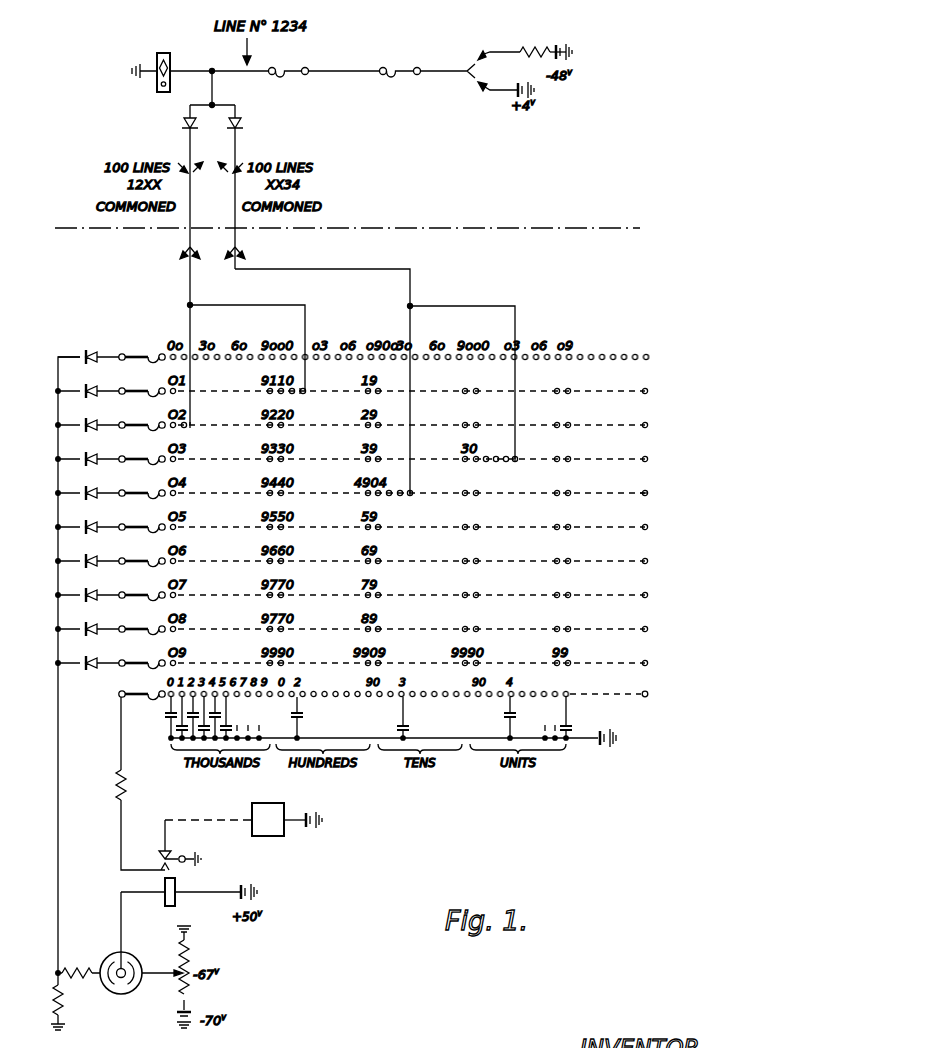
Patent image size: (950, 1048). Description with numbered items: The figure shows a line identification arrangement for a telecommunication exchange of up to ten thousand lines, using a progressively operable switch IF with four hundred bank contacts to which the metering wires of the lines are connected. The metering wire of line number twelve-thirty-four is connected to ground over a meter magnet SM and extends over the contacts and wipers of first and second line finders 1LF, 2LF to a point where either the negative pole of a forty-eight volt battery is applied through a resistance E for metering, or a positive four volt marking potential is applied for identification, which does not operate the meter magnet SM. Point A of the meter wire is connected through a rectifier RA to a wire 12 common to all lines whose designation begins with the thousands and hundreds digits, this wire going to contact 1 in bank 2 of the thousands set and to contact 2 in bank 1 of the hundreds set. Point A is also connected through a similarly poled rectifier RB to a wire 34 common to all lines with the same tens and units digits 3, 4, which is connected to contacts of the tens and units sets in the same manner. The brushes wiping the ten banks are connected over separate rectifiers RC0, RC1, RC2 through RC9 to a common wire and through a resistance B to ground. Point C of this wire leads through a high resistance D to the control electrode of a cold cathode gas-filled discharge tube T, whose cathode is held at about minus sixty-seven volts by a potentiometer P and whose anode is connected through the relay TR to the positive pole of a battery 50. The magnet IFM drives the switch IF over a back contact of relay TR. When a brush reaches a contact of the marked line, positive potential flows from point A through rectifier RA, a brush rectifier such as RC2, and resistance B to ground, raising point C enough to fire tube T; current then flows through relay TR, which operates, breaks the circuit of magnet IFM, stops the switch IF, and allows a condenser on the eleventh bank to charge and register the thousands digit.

The meter magnet SM is at (162, 62).
The point A of the meter wire A is at (211, 77).
The first line finder 1LF is at (289, 60).
The second line finder 2LF is at (400, 60).
The resistance E is at (525, 57).
The rectifier RA is at (180, 211).
The rectifier RB is at (243, 193).
The contact No. 1 / thousands digit value 1 is at (183, 354).
The contact No. 2 / hundreds digit value 2 is at (247, 337).
The tens digit value 3 is at (322, 381).
The units digit value 4 is at (462, 371).
The wire common to lines commencing with 12 is at (246, 416).
The wire common to lines ending with 34 is at (460, 483).
The rectifier RC0 is at (355, 366).
The rectifier RC1 is at (353, 400).
The rectifier RC2 is at (353, 434).
The rectifier RC9 is at (353, 672).
The switch IF is at (666, 510).
The 50 volt battery 50 is at (385, 703).
The magnet IFM is at (243, 819).
The relay TR is at (189, 886).
The cold cathode gas-filled discharge tube T is at (121, 982).
The potentiometer P is at (190, 977).
The resistance B is at (50, 1001).
The point C is at (48, 975).
The high resistance D is at (79, 982).